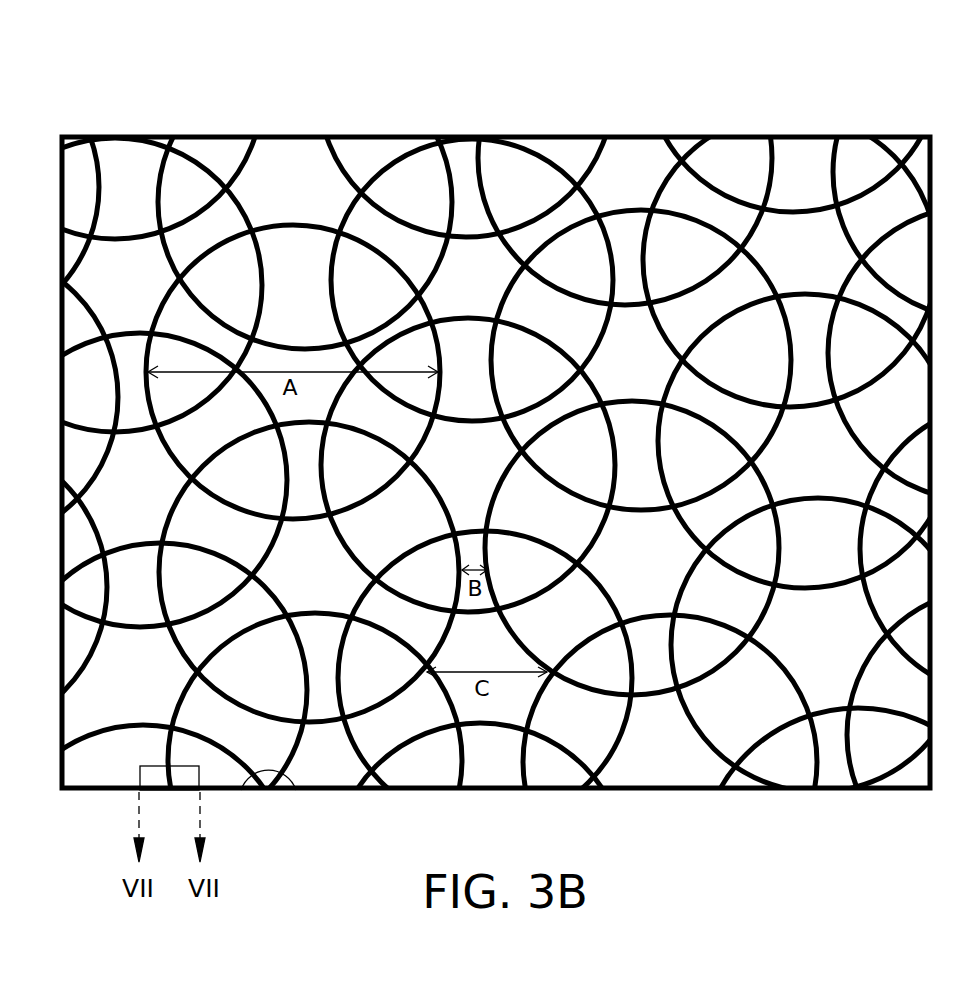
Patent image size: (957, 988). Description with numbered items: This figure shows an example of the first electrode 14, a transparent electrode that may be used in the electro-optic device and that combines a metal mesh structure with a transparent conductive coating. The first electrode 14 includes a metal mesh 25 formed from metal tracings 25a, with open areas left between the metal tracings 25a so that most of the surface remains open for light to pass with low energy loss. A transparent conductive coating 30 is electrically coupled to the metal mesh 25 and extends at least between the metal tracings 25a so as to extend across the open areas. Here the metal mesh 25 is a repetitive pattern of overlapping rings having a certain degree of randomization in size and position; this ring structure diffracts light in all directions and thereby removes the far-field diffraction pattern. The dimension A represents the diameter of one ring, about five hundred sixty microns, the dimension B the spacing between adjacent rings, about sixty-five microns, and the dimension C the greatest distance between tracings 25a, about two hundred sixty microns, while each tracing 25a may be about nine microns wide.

The first electrode 14 is at (413, 48).
The metal mesh 25 is at (248, 163).
The metal tracings 25a is at (173, 752).
The transparent conductive coating 30 is at (288, 180).